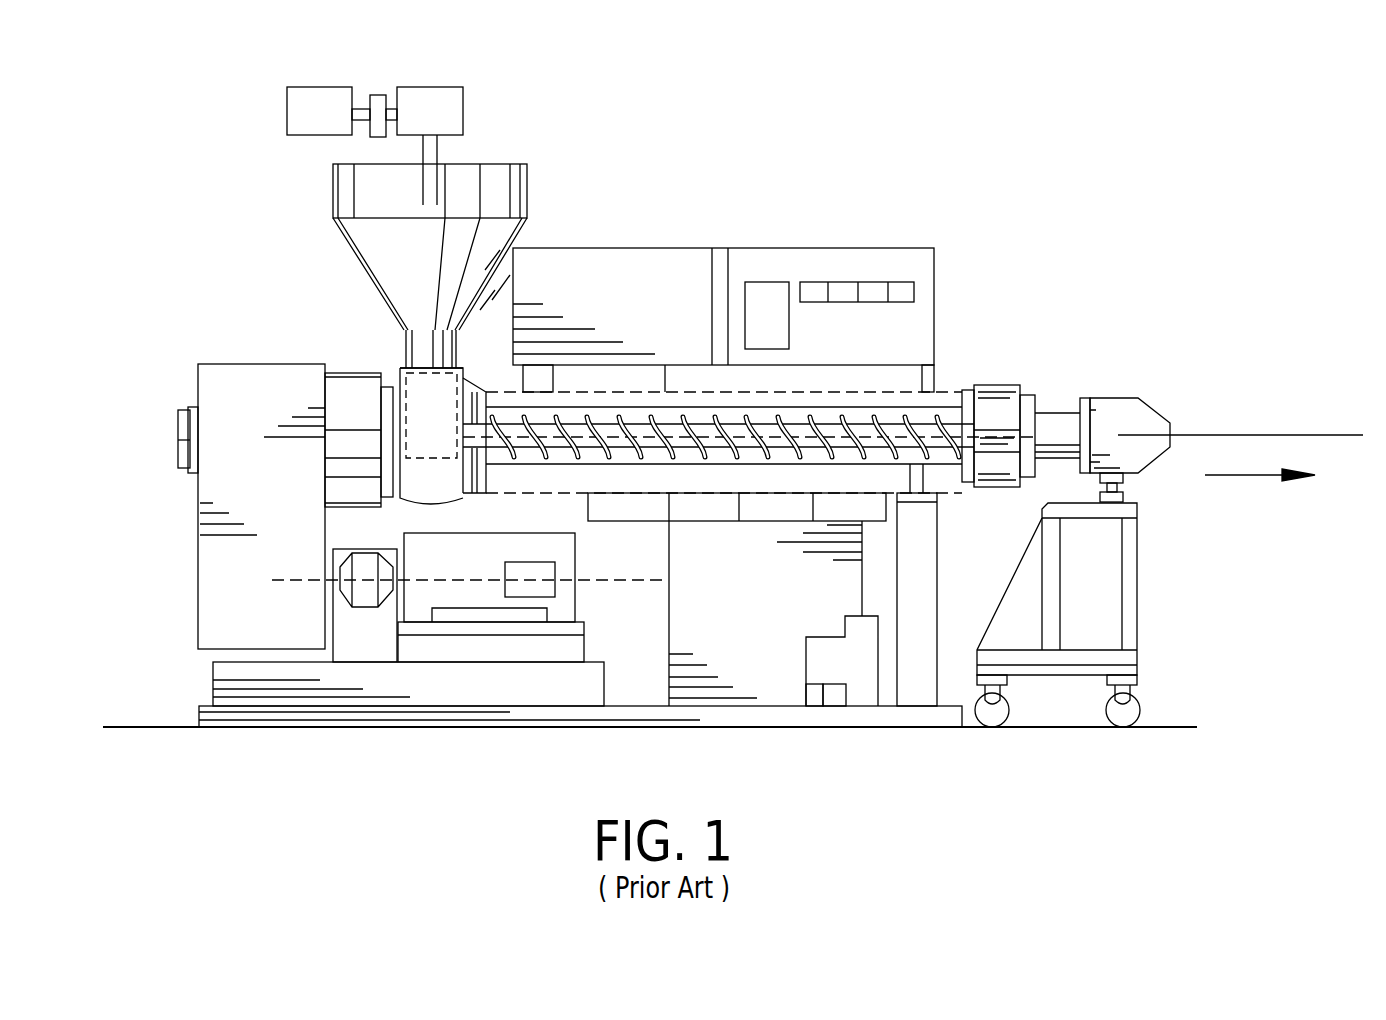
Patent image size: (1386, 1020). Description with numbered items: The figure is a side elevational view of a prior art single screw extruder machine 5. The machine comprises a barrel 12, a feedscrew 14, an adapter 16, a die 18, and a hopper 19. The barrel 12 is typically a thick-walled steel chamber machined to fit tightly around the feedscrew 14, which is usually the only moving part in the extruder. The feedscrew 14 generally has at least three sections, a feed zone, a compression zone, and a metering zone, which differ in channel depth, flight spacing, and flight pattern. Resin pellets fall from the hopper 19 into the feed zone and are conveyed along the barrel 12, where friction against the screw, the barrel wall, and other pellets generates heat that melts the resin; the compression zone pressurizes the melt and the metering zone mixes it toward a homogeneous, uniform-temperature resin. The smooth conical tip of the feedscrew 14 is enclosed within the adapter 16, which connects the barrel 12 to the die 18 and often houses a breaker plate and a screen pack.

The single screw extruder machine 5 is at (128, 180).
The barrel 12 is at (938, 403).
The feedscrew 14 is at (737, 425).
The adapter 16 is at (1031, 377).
The die 18 is at (1117, 413).
The hopper 19 is at (478, 267).